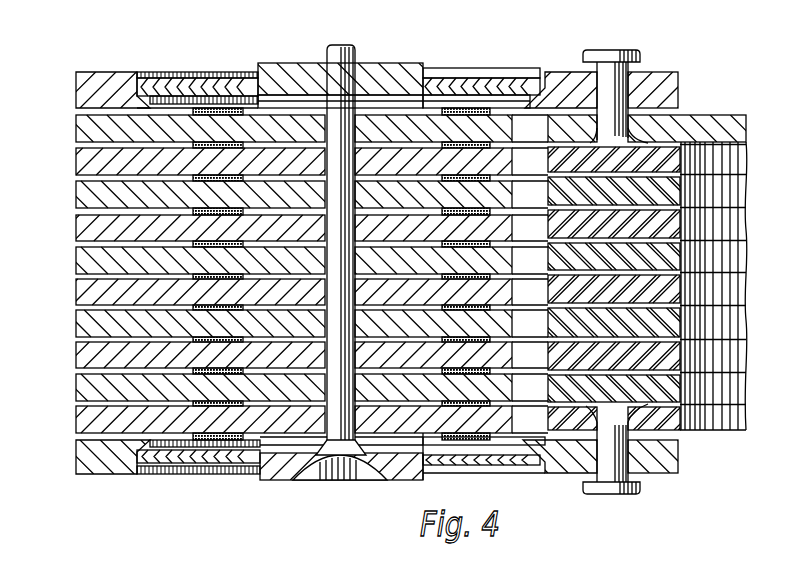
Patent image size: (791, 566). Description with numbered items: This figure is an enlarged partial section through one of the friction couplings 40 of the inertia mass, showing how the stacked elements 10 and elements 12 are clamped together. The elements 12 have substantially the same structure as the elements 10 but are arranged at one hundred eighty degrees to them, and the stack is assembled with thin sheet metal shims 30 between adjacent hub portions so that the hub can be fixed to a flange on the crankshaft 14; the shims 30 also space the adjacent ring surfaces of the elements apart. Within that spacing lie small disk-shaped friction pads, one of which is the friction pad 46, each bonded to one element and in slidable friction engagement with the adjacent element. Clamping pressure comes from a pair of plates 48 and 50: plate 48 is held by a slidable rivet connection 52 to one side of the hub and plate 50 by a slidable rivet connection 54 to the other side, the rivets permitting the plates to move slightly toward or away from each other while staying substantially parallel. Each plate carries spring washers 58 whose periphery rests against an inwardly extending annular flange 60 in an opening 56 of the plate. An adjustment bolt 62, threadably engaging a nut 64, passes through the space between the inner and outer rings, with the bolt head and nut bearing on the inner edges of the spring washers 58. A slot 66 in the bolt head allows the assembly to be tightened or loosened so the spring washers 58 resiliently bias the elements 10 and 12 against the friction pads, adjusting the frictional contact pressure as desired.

The element 10 is at (76, 215).
The element 12 is at (76, 118).
The crankshaft 14 is at (205, 180).
The shim 30 is at (620, 175).
The friction coupling 40 is at (106, 68).
The friction pad 46 is at (441, 178).
The plate 48 is at (662, 72).
The plate 50 is at (673, 463).
The slidable rivet connection 52 is at (594, 53).
The slidable rivet connection 54 is at (612, 490).
The opening 56 is at (148, 100).
The spring washer 58 is at (213, 85).
The annular flange 60 is at (150, 100).
The adjustment bolt 62 is at (272, 470).
The nut 64 is at (292, 63).
The slot 66 is at (343, 470).